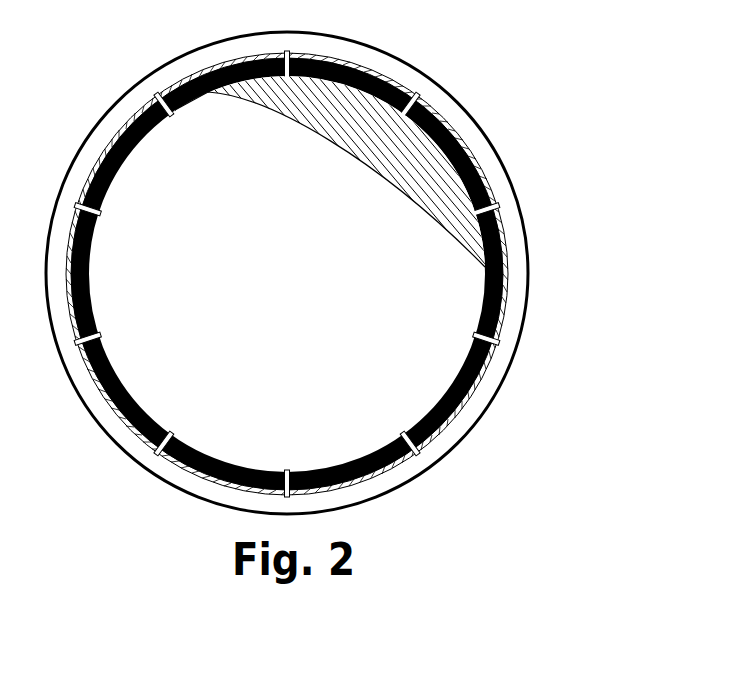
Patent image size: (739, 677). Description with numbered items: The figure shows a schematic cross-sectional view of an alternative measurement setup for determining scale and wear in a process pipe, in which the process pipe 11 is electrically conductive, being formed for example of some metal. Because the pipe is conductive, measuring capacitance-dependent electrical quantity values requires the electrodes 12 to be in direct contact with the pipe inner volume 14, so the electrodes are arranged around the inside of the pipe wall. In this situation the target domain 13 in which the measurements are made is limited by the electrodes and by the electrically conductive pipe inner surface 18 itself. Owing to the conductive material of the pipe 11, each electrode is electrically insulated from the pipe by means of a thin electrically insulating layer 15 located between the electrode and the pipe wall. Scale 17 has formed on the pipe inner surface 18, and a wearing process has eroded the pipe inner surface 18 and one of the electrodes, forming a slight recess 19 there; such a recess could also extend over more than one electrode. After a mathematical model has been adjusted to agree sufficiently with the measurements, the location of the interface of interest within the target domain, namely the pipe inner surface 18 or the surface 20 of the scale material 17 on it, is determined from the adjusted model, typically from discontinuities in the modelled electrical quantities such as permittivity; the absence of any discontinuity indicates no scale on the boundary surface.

The electrically conductive process pipe 11 is at (362, 54).
The electrodes 12 is at (478, 160).
The target domain 13 is at (495, 342).
The pipe inner volume 14 is at (322, 291).
The electrically insulating layer 15 is at (502, 222).
The scale 17 is at (345, 103).
The pipe inner surface 18 is at (409, 416).
The recess 19 is at (200, 93).
The surface of scale material 20 is at (400, 183).